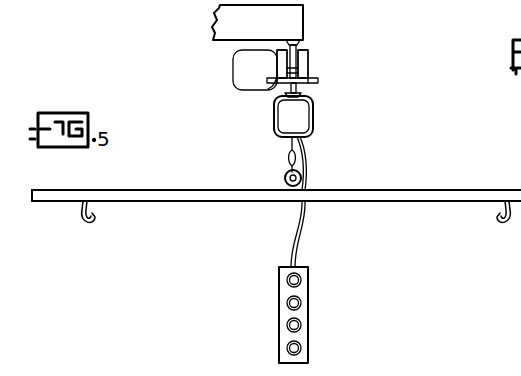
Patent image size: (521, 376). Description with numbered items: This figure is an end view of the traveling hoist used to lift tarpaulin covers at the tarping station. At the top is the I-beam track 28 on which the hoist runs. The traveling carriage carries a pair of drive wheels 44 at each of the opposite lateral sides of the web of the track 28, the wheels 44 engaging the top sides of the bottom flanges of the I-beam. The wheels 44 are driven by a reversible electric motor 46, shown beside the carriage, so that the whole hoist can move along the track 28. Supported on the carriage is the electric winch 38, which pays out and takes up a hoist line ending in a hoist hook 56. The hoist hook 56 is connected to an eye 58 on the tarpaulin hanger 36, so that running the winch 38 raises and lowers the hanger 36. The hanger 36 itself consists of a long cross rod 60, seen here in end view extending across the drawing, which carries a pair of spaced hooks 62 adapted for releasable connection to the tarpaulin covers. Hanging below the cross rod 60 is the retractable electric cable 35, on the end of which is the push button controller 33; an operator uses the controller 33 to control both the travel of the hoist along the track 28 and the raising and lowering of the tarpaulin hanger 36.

The track 28 is at (301, 49).
The drive wheels 44 is at (278, 58).
The reversible electric motor 46 is at (251, 82).
The winch 38 is at (275, 116).
The hoist hook 56 is at (289, 154).
The eye 58 is at (285, 179).
The cross rod 60 is at (314, 202).
The tarpaulin hanger 36 is at (397, 190).
The spaced hooks 62 is at (94, 222).
The retractable electric cable 35 is at (291, 233).
The push button controller 33 is at (279, 302).